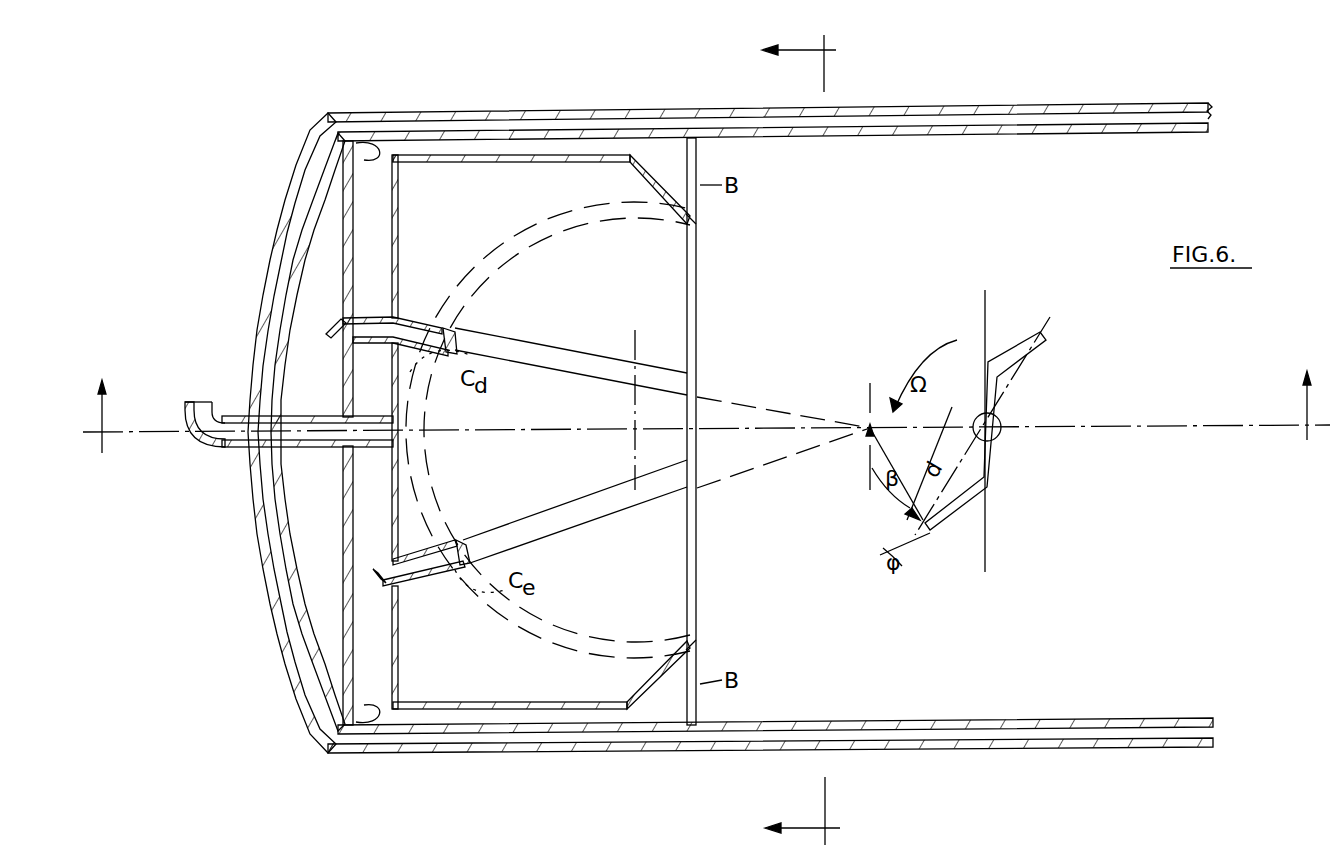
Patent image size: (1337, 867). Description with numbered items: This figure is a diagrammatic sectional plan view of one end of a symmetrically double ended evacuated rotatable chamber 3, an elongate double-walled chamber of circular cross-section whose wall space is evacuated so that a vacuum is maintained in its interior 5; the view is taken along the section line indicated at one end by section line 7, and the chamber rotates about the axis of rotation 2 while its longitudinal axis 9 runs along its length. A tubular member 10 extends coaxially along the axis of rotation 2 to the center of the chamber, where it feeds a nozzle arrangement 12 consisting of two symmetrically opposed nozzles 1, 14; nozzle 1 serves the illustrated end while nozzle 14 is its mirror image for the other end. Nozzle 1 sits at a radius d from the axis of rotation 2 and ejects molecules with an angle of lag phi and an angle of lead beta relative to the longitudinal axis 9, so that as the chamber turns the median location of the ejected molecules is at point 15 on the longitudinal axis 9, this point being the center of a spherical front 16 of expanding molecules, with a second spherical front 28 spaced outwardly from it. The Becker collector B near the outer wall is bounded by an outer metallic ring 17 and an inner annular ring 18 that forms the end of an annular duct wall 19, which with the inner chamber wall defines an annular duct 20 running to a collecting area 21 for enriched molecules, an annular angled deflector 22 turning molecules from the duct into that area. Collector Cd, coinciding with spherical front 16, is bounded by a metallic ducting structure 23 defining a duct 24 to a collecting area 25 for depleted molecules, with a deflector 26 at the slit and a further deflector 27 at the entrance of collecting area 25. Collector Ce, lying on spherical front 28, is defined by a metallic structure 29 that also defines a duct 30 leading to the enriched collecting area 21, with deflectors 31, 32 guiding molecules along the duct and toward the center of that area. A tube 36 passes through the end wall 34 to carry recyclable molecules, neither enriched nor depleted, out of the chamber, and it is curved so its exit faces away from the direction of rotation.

The nozzle 1 is at (931, 532).
The axis of rotation 2 is at (1000, 437).
The evacuated rotatable chamber 3 is at (994, 104).
The interior 5 is at (806, 275).
The section line 7 is at (788, 440).
The longitudinal axis 9 is at (1207, 426).
The tubular member 10 is at (990, 436).
The nozzle arrangement 12 is at (998, 400).
The nozzle 14 is at (1046, 334).
The point 15 is at (634, 430).
The spherical front 16 is at (518, 620).
The outer metallic ring 17 is at (698, 143).
The inner annular ring 18 is at (699, 222).
The annular duct wall 19 is at (603, 154).
The annular duct 20 is at (541, 152).
The collecting area 21 is at (376, 196).
The annular angled deflector 22 is at (366, 150).
The metallic ducting structure 23 is at (420, 318).
The duct 24 is at (368, 335).
The collecting area 25 is at (328, 303).
The deflector 26 is at (462, 342).
The further deflector 27 is at (335, 321).
The spherical front 28 is at (533, 632).
The metallic structure 29 is at (418, 560).
The duct 30 is at (412, 580).
The deflector 31 is at (477, 558).
The deflector 32 is at (384, 580).
The end wall 34 is at (250, 536).
The tube 36 is at (222, 446).